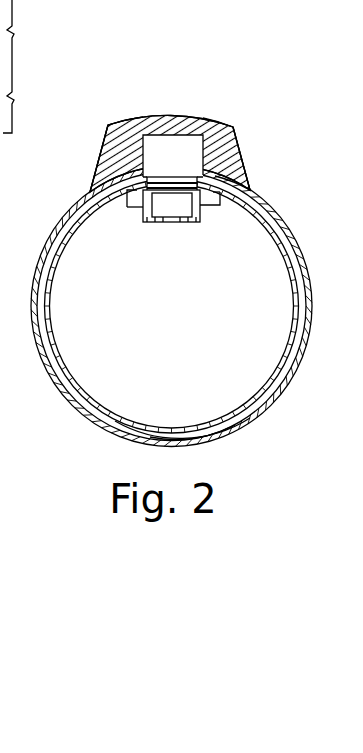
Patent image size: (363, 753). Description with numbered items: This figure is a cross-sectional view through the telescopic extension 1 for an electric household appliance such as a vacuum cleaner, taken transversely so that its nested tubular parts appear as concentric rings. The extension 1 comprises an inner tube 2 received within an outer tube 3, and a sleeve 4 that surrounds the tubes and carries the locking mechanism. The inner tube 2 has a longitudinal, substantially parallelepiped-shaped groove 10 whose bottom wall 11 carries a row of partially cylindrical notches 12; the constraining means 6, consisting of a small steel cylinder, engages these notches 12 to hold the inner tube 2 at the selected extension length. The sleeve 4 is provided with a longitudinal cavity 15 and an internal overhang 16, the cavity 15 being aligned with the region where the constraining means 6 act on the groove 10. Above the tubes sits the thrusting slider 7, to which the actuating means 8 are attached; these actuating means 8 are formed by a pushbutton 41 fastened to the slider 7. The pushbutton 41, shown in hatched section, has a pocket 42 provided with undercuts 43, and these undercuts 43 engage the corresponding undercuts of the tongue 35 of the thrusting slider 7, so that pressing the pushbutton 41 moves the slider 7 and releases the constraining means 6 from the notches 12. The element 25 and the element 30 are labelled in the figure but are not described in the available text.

The telescopic extension 1 is at (75, 168).
The inner tube 2 is at (50, 292).
The outer tube 3 is at (62, 397).
The sleeve 4 is at (293, 337).
The constraining means 6 is at (180, 207).
The thrusting slider 7 is at (171, 136).
The actuating means 8 is at (136, 106).
The groove 10 is at (207, 208).
The bottom wall 11 is at (140, 200).
The notches 12 is at (157, 222).
The longitudinal cavity 15 is at (234, 176).
The internal overhang 16 is at (200, 206).
The opening 25 is at (146, 176).
The nut bottom 30 is at (170, 218).
The tongue 35 is at (177, 152).
The pushbutton 41 is at (116, 132).
The pocket 42 is at (210, 122).
The undercuts 43 is at (143, 157).